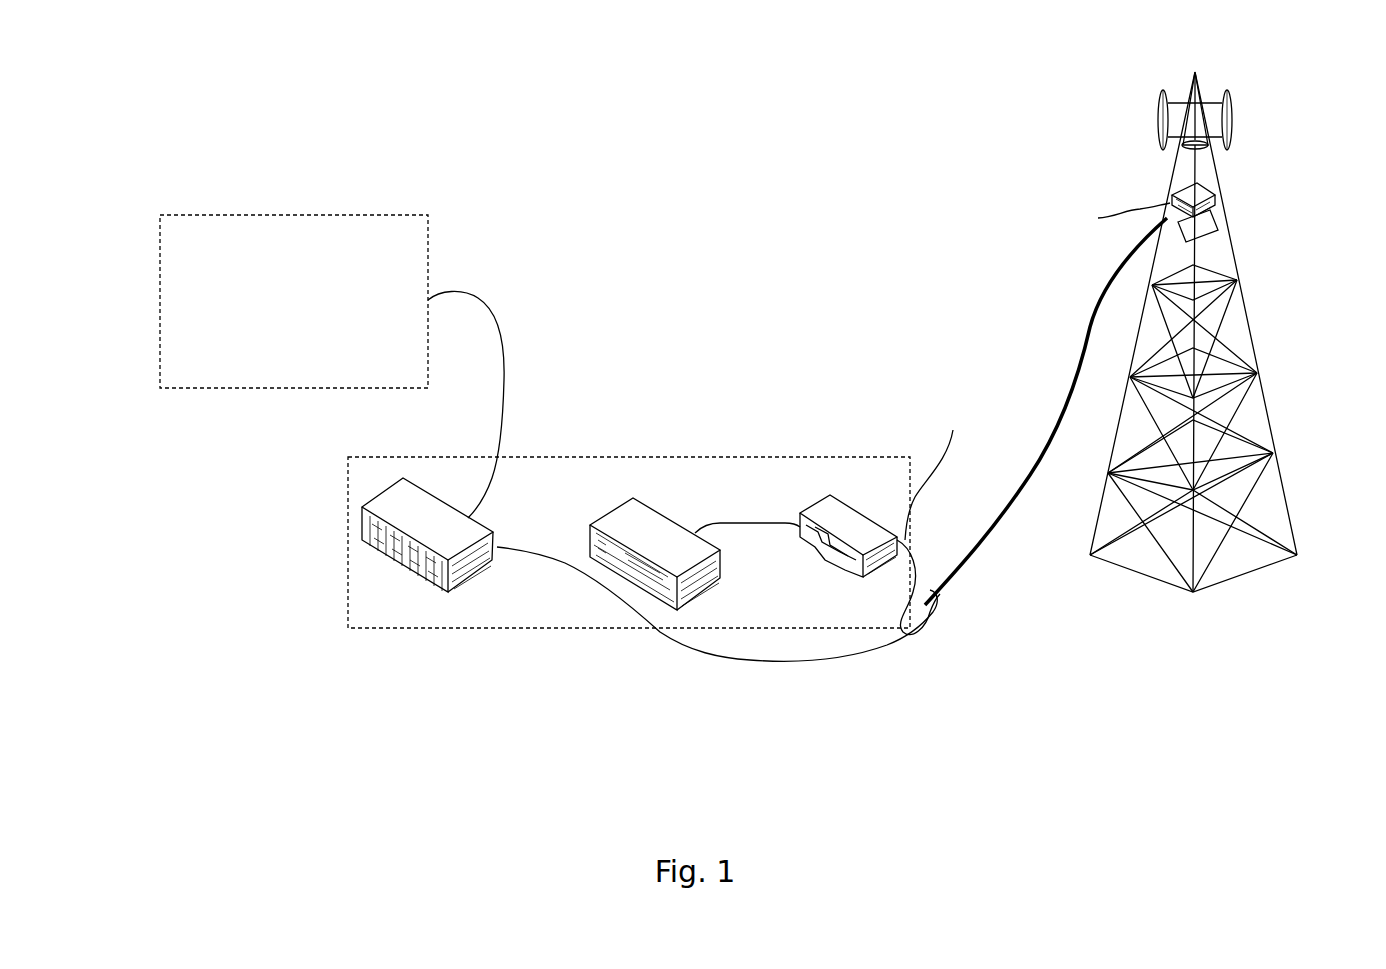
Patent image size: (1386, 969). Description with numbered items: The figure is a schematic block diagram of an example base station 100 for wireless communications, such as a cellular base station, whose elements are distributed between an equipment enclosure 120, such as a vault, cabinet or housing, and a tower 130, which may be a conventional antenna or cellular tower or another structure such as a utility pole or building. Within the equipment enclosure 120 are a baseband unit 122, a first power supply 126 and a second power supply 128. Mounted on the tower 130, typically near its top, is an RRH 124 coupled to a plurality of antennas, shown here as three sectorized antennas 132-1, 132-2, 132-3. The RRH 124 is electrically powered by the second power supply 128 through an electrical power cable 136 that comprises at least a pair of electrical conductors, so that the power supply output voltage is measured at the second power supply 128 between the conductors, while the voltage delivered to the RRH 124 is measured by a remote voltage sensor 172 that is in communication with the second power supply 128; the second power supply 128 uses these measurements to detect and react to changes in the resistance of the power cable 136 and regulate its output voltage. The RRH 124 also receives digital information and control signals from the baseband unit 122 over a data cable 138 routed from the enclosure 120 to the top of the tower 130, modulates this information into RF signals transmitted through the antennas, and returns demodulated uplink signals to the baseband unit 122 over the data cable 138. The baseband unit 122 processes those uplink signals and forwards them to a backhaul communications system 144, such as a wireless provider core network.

The base station 100 is at (588, 122).
The equipment enclosure 120 is at (347, 575).
The baseband unit 122 is at (475, 577).
The RRH 124 is at (1167, 195).
The first power supply 126 is at (657, 527).
The second power supply 128 is at (843, 508).
The tower 130 is at (1267, 410).
The sectorized antenna 132-1 is at (1207, 147).
The sectorized antenna 132-2 is at (1162, 133).
The sectorized antenna 132-3 is at (1233, 97).
The electrical power cable 136 is at (918, 550).
The data cable 138 is at (750, 662).
The backhaul communications system 144 is at (332, 366).
The remote voltage sensor 172 is at (1213, 230).